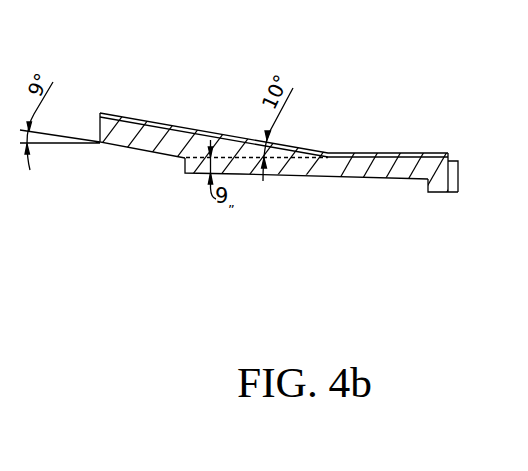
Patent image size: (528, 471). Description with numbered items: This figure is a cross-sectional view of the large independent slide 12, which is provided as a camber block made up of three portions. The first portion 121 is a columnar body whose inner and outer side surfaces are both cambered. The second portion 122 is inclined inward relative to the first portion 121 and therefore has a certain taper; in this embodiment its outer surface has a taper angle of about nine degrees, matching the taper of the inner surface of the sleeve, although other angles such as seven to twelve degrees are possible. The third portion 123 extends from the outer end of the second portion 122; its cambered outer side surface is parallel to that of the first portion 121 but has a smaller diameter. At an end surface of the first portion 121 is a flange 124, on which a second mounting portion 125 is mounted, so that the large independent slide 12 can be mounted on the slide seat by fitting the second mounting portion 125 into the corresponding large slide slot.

The large independent slide 12 is at (285, 135).
The first portion 121 is at (367, 178).
The second portion 122 is at (130, 147).
The third portion 123 is at (239, 174).
The flange 124 is at (436, 193).
The second mounting portion 125 is at (459, 167).